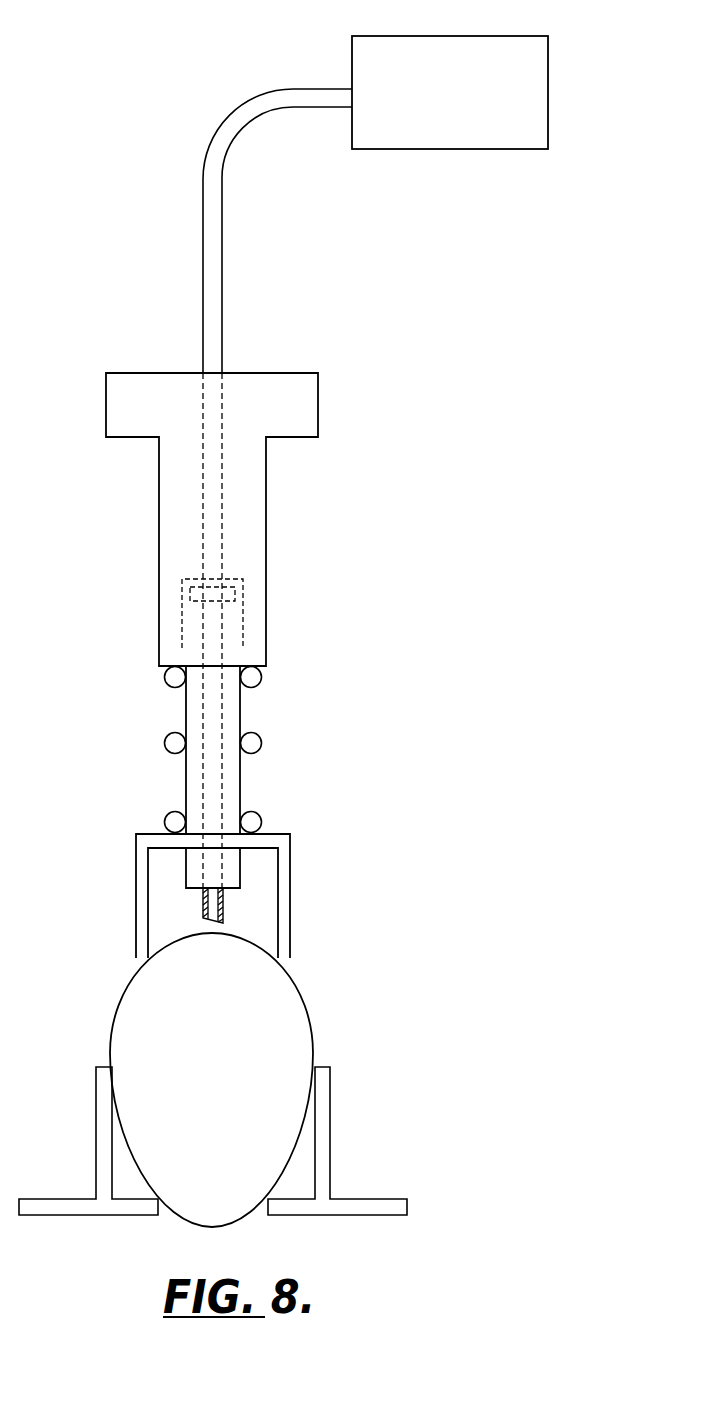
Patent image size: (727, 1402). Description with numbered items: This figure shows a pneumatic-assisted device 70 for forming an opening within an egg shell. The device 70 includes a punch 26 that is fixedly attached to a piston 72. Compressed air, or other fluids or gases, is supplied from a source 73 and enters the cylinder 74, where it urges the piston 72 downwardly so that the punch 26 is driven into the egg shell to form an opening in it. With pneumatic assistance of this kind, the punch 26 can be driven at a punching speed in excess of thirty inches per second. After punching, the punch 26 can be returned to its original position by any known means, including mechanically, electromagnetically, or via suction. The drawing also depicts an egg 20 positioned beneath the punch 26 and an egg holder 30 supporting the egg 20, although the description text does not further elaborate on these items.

The source 73 is at (548, 72).
The pneumatic-assisted device 70 is at (560, 307).
The cylinder 74 is at (243, 579).
The piston 72 is at (225, 603).
The punch 26 is at (223, 908).
The egg 20 is at (308, 1008).
The egg holder 30 is at (330, 1150).